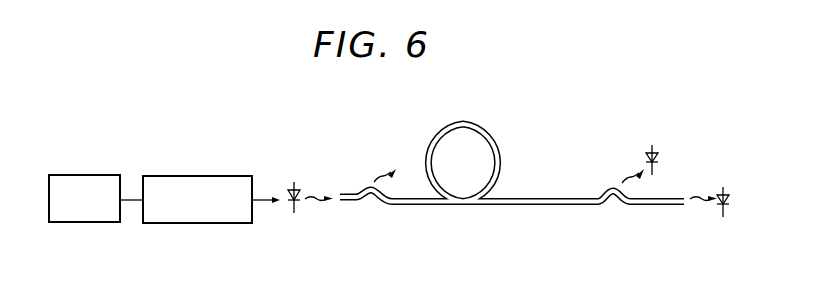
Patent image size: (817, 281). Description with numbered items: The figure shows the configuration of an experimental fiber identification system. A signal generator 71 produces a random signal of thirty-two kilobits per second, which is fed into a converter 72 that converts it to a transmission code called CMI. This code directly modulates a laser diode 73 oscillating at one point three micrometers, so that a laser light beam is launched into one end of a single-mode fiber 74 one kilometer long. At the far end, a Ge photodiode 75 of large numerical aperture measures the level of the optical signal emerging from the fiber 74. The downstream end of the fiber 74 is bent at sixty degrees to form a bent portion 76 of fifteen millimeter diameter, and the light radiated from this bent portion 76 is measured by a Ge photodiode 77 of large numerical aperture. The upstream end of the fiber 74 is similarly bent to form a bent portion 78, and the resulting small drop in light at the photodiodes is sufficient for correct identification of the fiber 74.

The signal generator 71 is at (87, 175).
The converter 72 is at (199, 176).
The laser diode 73 is at (298, 185).
The single-mode fiber 74 is at (528, 207).
The Ge photodiode 75 is at (732, 196).
The bent portion 76 is at (613, 207).
The Ge photodiode 77 is at (667, 153).
The bent portion 78 is at (372, 206).